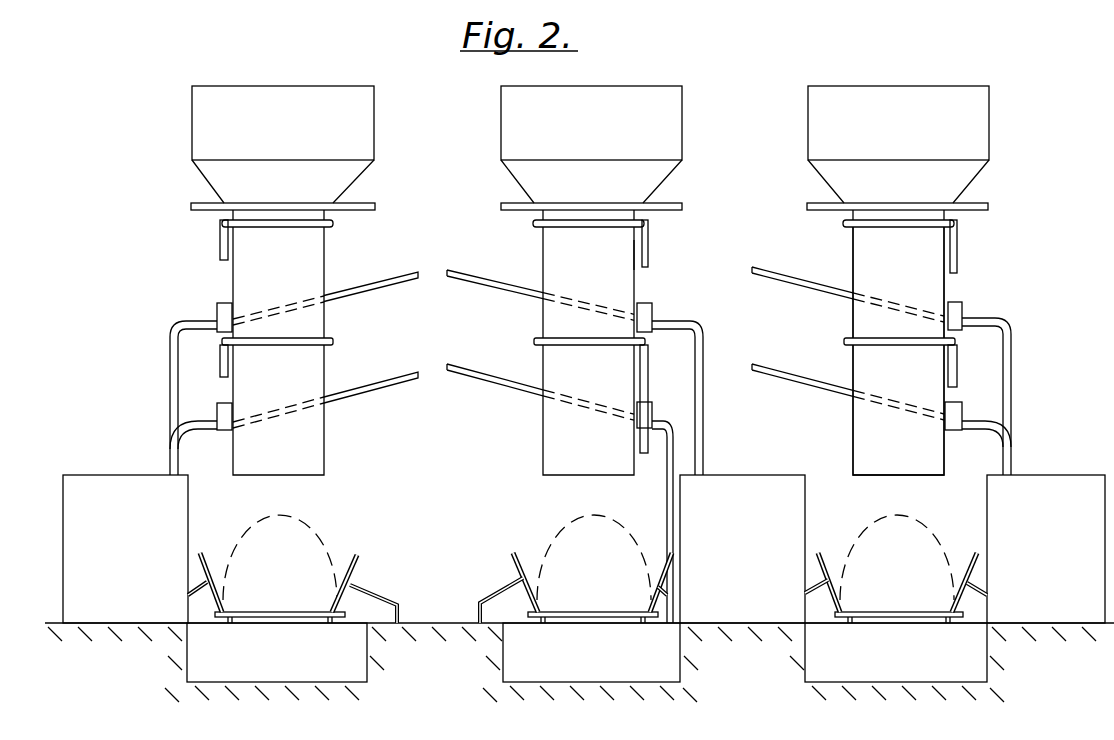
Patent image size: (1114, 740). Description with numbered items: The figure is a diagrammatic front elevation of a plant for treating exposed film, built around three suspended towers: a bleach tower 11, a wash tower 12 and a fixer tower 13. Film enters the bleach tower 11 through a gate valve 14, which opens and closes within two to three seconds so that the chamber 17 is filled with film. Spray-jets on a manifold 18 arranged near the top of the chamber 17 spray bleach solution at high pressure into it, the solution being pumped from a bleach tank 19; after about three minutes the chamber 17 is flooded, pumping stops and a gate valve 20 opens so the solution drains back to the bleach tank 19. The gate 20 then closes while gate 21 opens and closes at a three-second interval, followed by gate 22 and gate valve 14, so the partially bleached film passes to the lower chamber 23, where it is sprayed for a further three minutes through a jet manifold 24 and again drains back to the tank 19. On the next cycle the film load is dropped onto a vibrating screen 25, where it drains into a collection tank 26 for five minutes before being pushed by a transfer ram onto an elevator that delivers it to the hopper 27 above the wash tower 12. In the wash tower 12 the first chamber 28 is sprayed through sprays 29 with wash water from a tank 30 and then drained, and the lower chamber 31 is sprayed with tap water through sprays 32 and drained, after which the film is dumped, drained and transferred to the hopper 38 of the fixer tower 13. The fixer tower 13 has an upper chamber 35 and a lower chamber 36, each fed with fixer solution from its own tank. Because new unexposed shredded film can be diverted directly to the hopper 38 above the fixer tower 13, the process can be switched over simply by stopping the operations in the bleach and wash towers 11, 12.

The bleach tower 11 is at (945, 262).
The wash tower 12 is at (634, 285).
The fixer tower 13 is at (318, 368).
The gate valve 14 is at (358, 205).
The chamber 17 is at (882, 248).
The manifold 18 is at (219, 238).
The bleach tank 19 is at (990, 502).
The gate valve 20 is at (962, 310).
The gate 21 is at (790, 378).
The gate 22 is at (815, 292).
The lower chamber 23 is at (880, 425).
The jet manifold 24 is at (855, 332).
The vibrating screen 25 is at (932, 617).
The collection tank 26 is at (980, 662).
The hopper 27 is at (678, 127).
The first chamber 28 is at (650, 258).
The sprays 29 is at (650, 232).
The tank 30 is at (741, 472).
The lower chamber 31 is at (612, 388).
The sprays 32 is at (618, 348).
The upper chamber 35 is at (292, 270).
The lower chamber 36 is at (288, 378).
The hopper 38 is at (370, 127).